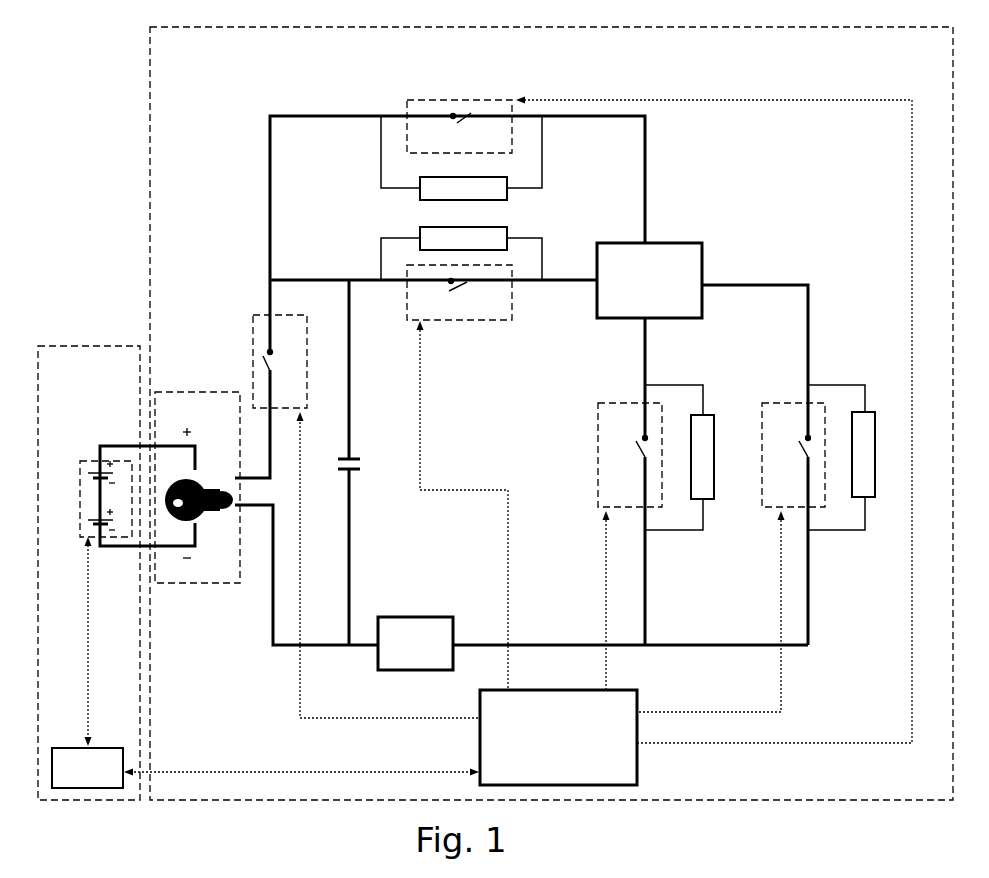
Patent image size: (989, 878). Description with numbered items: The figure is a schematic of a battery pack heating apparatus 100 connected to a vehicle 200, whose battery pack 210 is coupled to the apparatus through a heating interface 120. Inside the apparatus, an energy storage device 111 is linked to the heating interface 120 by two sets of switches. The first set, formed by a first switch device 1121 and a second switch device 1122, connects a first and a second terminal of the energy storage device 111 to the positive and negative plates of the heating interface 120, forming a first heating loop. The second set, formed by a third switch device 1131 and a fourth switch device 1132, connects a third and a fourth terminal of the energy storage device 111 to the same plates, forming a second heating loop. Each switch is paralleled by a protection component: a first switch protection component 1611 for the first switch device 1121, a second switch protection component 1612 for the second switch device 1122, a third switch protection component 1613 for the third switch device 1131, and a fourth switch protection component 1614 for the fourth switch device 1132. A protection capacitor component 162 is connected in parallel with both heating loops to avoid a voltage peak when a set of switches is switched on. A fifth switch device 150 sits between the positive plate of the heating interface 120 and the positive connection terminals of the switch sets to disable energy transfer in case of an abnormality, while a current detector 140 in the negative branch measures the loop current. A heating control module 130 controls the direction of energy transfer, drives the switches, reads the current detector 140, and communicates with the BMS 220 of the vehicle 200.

The battery pack heating apparatus 100 is at (551, 413).
The vehicle 200 is at (89, 573).
The battery pack 210 is at (127, 491).
The BMS 220 is at (87, 768).
The heating interface 120 is at (197, 487).
The fifth switch device 150 is at (272, 379).
The protection capacitor component 162 is at (364, 462).
The energy storage device 111 is at (649, 280).
The third switch device 1131 is at (459, 126).
The third switch protection component 1613 is at (461, 158).
The first switch protection component 1611 is at (461, 253).
The first switch device 1121 is at (459, 292).
The second switch device 1122 is at (628, 455).
The second switch protection component 1612 is at (699, 457).
The fourth switch device 1132 is at (791, 455).
The fourth switch protection component 1614 is at (860, 457).
The current detector 140 is at (415, 643).
The heating control module 130 is at (558, 737).